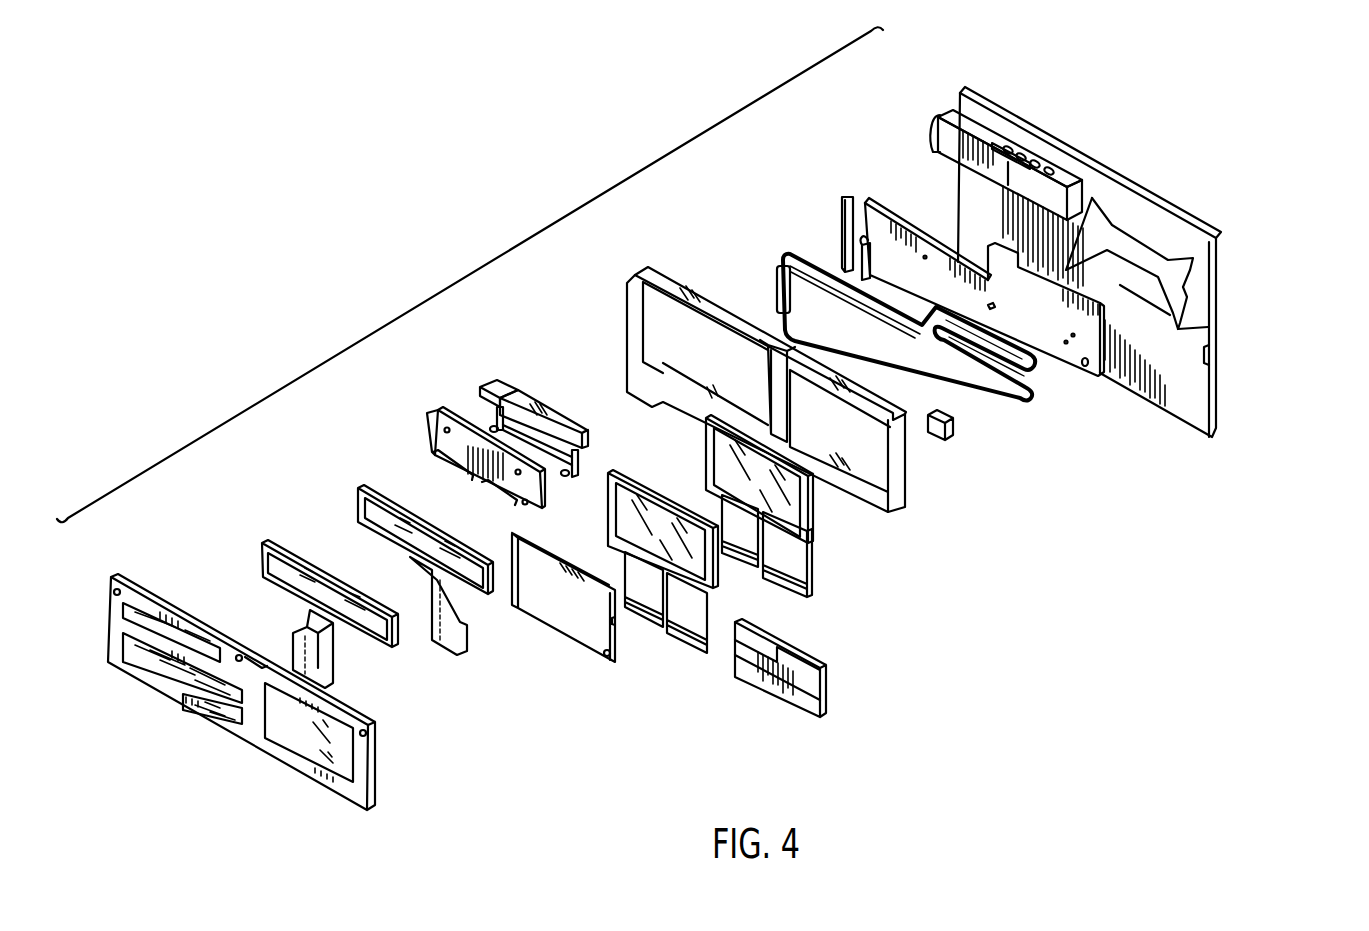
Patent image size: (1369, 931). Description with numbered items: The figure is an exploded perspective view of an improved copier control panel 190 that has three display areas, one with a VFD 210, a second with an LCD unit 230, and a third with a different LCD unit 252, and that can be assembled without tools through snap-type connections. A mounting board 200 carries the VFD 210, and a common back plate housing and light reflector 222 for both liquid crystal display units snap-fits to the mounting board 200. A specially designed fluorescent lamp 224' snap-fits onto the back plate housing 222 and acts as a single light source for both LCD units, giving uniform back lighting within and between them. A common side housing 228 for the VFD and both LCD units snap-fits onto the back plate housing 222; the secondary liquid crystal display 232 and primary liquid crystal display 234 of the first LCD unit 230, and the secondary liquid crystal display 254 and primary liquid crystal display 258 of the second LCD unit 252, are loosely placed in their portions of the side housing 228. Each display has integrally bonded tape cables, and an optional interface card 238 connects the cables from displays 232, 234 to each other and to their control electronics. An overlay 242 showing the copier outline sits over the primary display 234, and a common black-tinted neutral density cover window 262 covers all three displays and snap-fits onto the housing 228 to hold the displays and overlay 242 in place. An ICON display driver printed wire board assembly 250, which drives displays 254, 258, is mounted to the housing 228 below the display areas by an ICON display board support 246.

The control panel 190 is at (503, 250).
The mounting board 200 is at (1218, 428).
The VFD 210 is at (938, 133).
The back plate housing and light reflector 222 is at (1103, 382).
The fluorescent lamp 224' is at (883, 300).
The common side housing 228 is at (906, 503).
The LCD unit 230 is at (746, 527).
The secondary liquid crystal display 232 is at (810, 532).
The primary liquid crystal display 234 is at (716, 594).
The interface card 238 is at (821, 704).
The overlay 242 is at (583, 652).
The ICON display board support 246 is at (498, 385).
The ICON display driver printed wire board assembly 250 is at (428, 425).
The LCD unit 252 is at (510, 615).
The secondary liquid crystal display 254 is at (357, 500).
The primary liquid crystal display 258 is at (262, 555).
The neutral density cover window 262 is at (374, 803).